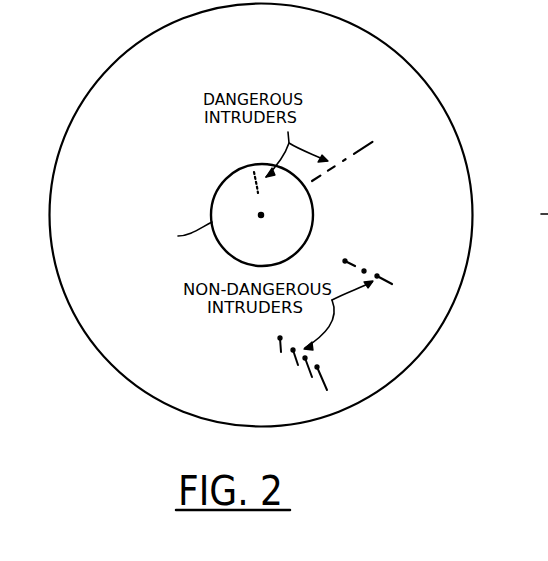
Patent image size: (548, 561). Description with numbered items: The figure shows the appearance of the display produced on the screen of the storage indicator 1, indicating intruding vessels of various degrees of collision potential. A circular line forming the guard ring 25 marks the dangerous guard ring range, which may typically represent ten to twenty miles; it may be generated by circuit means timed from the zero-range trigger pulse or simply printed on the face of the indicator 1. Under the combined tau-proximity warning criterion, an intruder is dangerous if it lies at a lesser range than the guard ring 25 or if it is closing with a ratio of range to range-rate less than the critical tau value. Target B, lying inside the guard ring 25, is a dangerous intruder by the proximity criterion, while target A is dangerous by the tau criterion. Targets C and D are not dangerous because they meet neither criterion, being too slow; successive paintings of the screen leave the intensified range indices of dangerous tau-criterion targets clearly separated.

The storage indicator 1 is at (60, 307).
The guard ring 25 is at (222, 181).
The target A is at (346, 166).
The target B is at (247, 187).
The target C is at (291, 363).
The target D is at (367, 259).